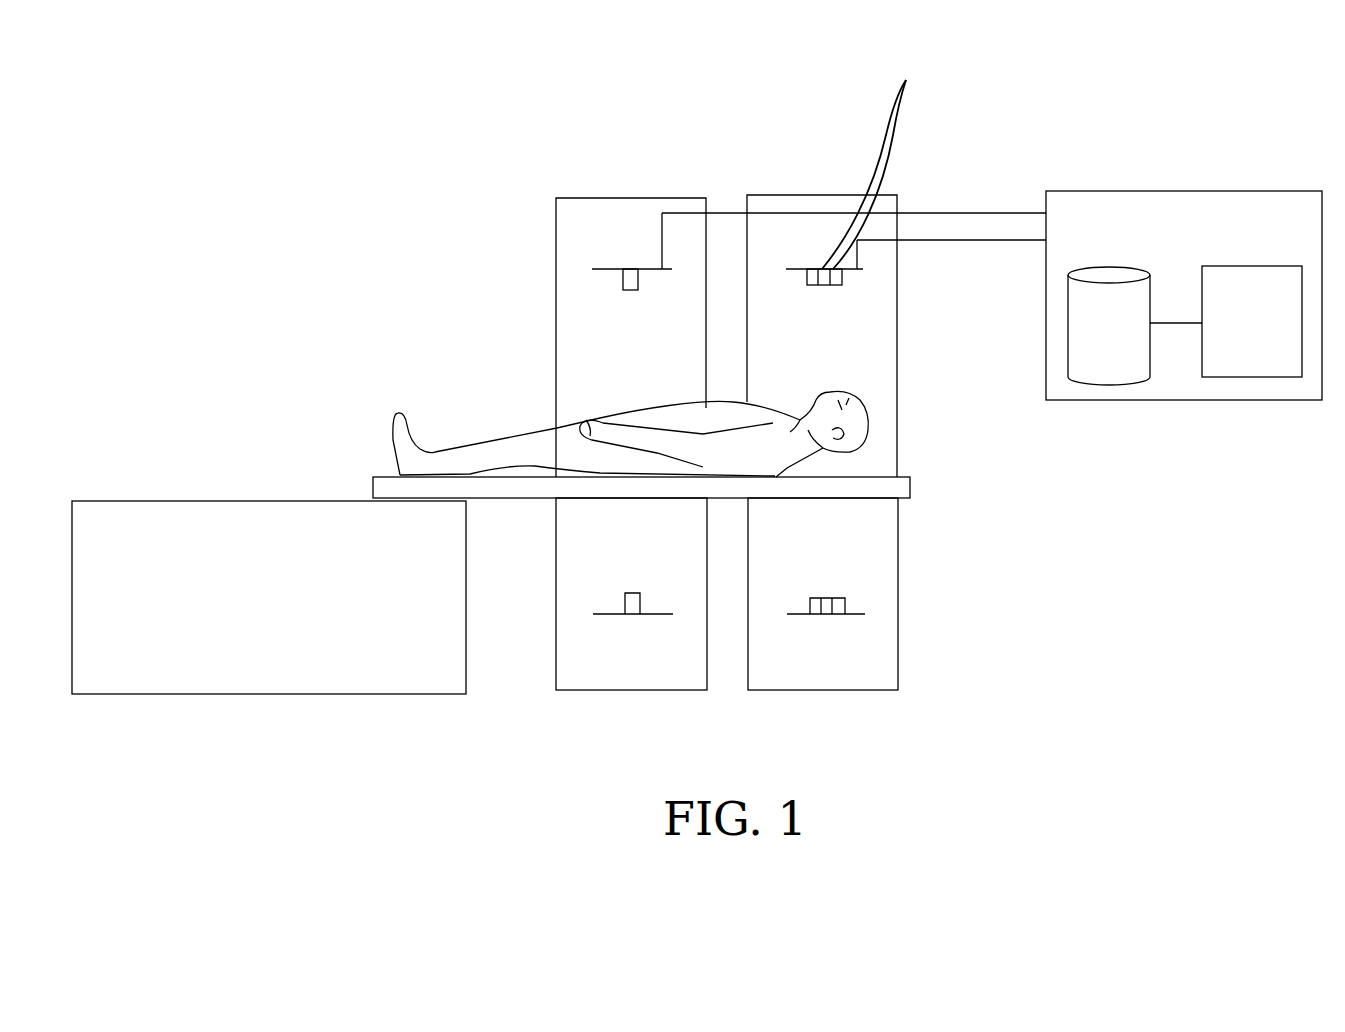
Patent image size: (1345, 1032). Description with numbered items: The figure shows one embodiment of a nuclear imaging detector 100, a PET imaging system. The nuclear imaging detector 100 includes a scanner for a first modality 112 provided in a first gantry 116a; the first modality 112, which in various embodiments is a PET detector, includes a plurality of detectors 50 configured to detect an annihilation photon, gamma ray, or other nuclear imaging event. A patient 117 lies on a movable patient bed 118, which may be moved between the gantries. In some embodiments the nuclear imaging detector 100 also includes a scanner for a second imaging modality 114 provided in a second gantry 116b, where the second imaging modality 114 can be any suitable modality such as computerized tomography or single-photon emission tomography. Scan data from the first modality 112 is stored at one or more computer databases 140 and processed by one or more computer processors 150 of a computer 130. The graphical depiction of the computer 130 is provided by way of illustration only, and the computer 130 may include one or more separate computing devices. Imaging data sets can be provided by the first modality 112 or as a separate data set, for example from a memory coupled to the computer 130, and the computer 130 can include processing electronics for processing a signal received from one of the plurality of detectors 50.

The nuclear imaging detector 100 is at (284, 271).
The detectors 50 is at (874, 161).
The first modality 112 is at (843, 280).
The second imaging modality 114 is at (592, 270).
The first gantry 116a is at (628, 198).
The second gantry 116b is at (818, 195).
The patient 117 is at (523, 430).
The movable patient bed 118 is at (383, 477).
The computer 130 is at (1080, 191).
The computer databases 140 is at (1092, 360).
The computer processors 150 is at (1242, 342).